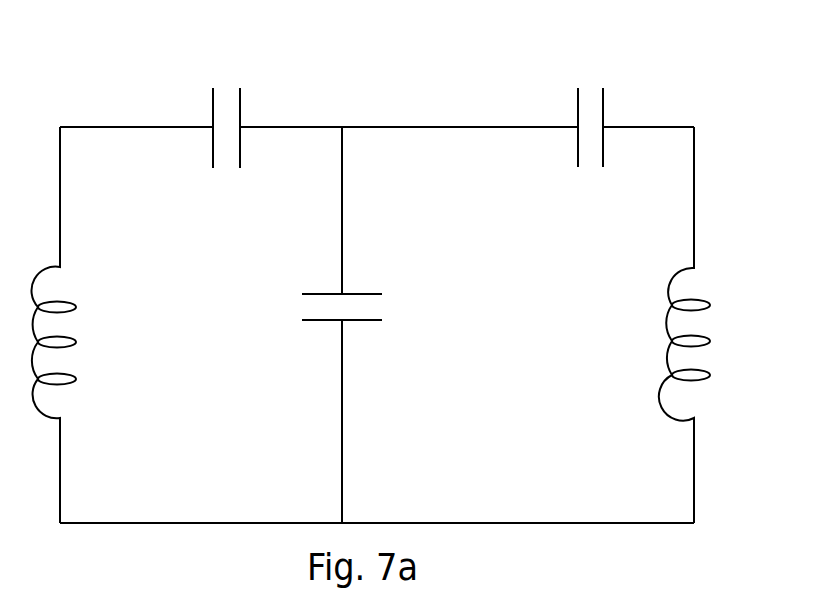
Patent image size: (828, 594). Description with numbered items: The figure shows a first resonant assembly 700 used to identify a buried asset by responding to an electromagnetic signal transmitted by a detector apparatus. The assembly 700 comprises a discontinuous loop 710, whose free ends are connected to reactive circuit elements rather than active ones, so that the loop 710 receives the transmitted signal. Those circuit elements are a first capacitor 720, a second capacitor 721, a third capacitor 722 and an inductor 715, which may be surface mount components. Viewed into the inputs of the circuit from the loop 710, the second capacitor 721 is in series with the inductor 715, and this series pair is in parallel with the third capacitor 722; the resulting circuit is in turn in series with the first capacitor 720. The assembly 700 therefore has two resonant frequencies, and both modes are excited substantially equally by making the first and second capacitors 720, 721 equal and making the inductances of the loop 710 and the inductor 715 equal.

The first resonant assembly 700 is at (373, 284).
The first capacitor 720 is at (232, 107).
The second capacitor 721 is at (594, 106).
The third capacitor 722 is at (385, 308).
The discontinuous loop 710 is at (89, 325).
The inductor 715 is at (653, 325).